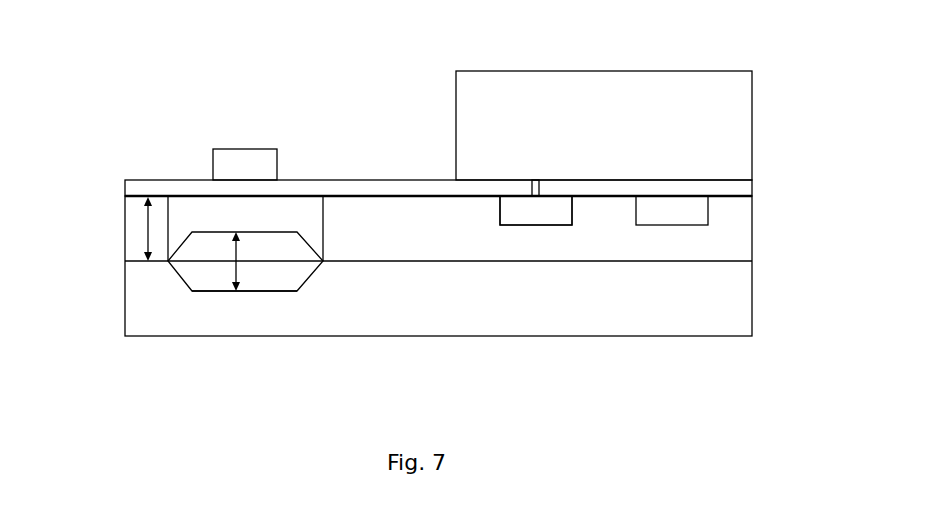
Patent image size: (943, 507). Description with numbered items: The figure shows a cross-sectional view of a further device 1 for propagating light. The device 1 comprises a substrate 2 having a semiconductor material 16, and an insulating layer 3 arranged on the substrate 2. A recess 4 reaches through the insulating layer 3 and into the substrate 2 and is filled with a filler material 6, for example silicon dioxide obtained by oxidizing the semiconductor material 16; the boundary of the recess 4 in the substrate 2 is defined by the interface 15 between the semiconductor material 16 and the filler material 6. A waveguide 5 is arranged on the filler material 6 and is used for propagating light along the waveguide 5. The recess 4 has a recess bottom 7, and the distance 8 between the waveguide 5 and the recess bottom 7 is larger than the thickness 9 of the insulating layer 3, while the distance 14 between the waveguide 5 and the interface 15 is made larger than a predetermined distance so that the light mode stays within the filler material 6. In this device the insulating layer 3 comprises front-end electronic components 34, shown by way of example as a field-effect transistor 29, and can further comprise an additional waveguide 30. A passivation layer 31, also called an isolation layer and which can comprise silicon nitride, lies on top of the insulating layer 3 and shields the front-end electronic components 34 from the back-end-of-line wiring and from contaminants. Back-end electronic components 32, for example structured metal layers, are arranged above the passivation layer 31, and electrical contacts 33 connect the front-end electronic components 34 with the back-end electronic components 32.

The device 1 is at (165, 78).
The substrate 2 is at (480, 266).
The semiconductor material 16 is at (745, 312).
The insulating layer 3 is at (745, 240).
The recess 4 is at (262, 309).
The filler material 6 is at (292, 278).
The waveguide 5 is at (262, 155).
The recess bottom 7 is at (240, 338).
The interface 15 is at (258, 292).
The distance 8 is at (146, 280).
The distance 14 is at (235, 272).
The thickness 9 is at (147, 224).
The additional waveguide 30 is at (700, 214).
The passivation layer 31 is at (130, 183).
The back-end electronic components 32 is at (737, 131).
The electrical contacts 33 is at (543, 180).
The front-end electronic components 34 is at (477, 167).
The field-effect transistor 29 is at (508, 207).